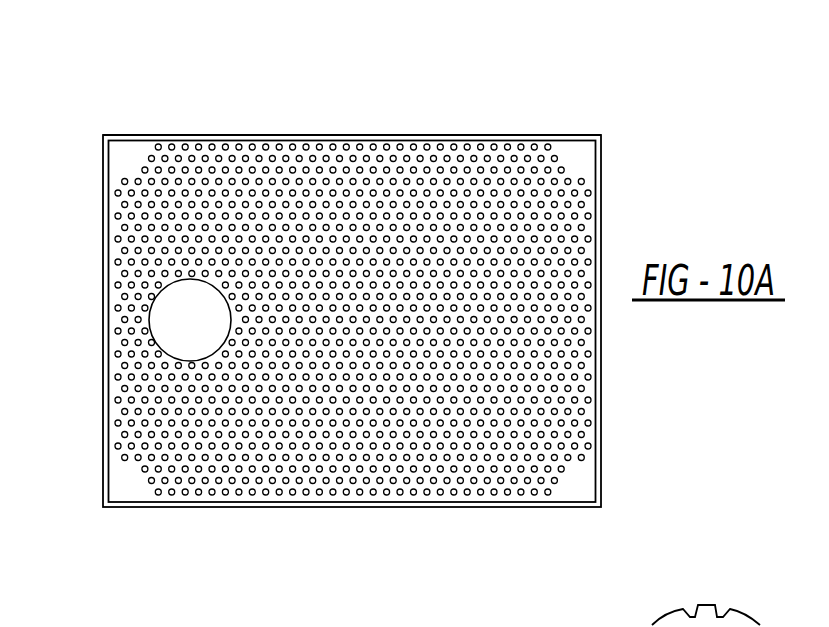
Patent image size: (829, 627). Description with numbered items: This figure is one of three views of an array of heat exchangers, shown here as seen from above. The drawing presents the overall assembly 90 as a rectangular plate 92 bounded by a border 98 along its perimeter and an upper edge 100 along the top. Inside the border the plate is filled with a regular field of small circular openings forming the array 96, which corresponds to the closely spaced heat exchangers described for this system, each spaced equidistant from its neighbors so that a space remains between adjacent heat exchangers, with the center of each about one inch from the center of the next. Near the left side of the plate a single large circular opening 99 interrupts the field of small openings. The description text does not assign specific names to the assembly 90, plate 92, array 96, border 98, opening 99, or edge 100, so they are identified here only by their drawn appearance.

The perforated plate 90 is at (285, 88).
The plate body 92 is at (130, 507).
The perforations 96 is at (484, 494).
The rim 98 is at (547, 135).
The large aperture 99 is at (153, 347).
The top edge 100 is at (394, 135).